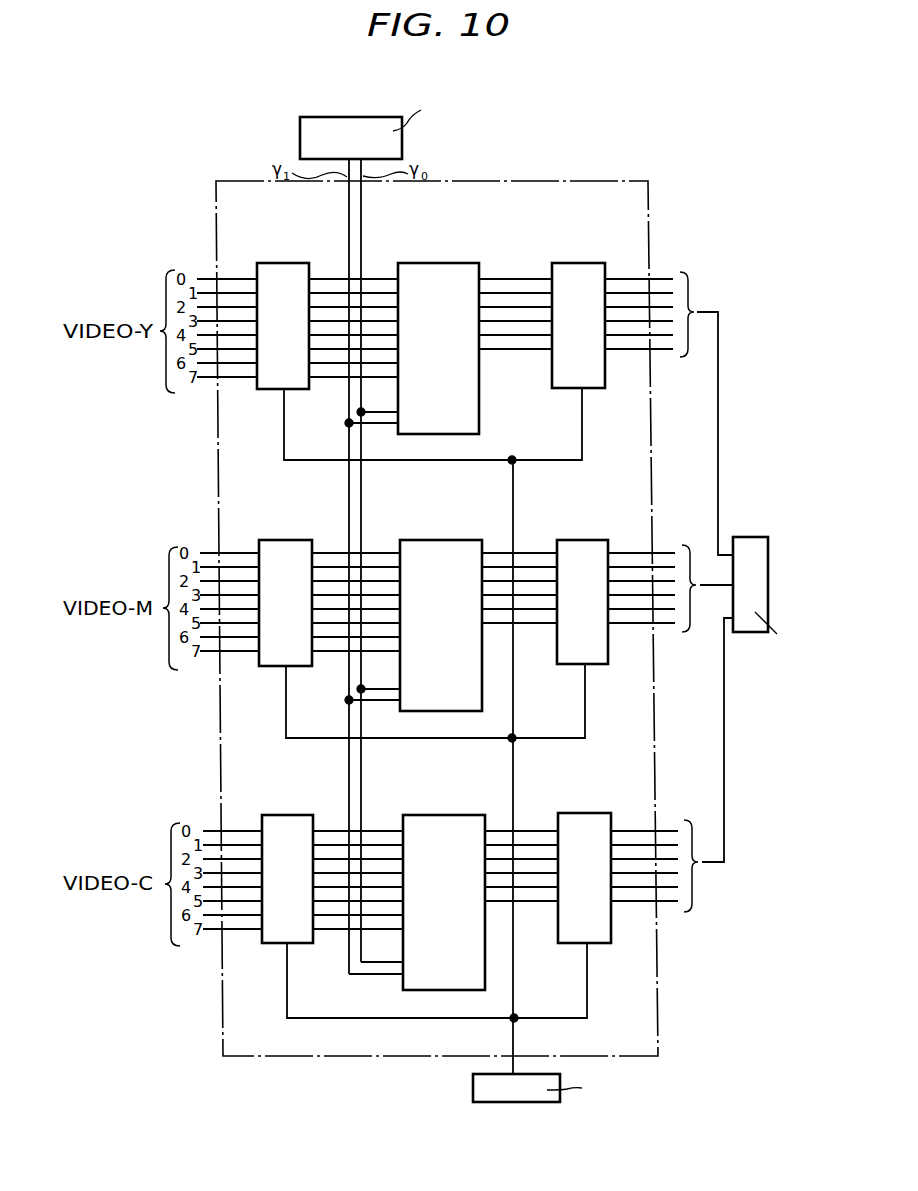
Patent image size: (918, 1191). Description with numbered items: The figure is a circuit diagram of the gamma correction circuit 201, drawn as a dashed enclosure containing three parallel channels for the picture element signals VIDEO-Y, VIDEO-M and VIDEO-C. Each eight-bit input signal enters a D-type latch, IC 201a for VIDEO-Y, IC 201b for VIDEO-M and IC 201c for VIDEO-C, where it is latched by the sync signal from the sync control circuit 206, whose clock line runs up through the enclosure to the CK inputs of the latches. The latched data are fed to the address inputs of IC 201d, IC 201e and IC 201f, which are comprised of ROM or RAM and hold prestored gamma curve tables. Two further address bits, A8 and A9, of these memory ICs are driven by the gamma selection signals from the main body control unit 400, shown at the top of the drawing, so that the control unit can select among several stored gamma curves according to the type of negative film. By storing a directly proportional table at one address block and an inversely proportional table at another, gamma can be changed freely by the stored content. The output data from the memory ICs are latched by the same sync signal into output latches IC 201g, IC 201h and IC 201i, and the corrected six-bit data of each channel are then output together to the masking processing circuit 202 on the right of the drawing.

The main body control unit 400 is at (355, 117).
The gamma correction circuit 201 is at (585, 181).
The IC 201a is at (283, 263).
The IC 201b is at (286, 540).
The IC 201c is at (288, 815).
The IC 201d is at (442, 263).
The IC 201e is at (434, 540).
The IC 201f is at (437, 815).
The IC 201g is at (587, 263).
The IC 201h is at (582, 540).
The IC 201i is at (585, 813).
The masking processing circuit 202 is at (759, 537).
The sync control circuit 206 is at (518, 1102).